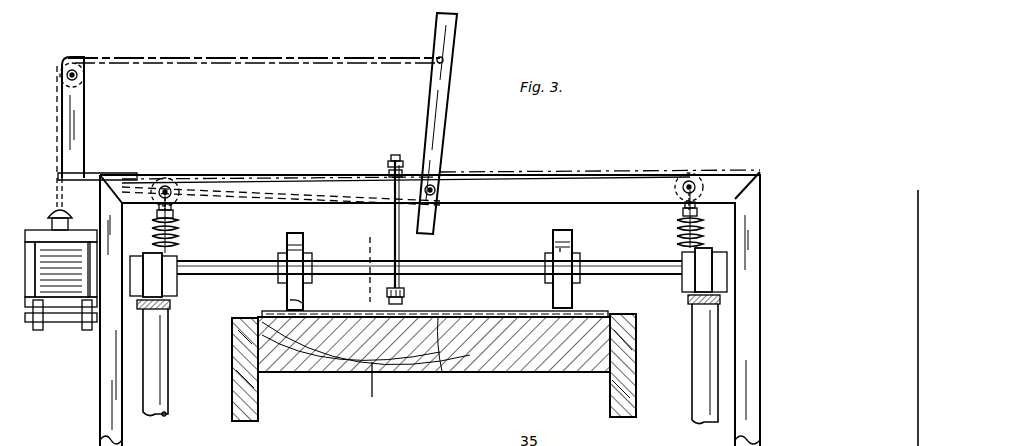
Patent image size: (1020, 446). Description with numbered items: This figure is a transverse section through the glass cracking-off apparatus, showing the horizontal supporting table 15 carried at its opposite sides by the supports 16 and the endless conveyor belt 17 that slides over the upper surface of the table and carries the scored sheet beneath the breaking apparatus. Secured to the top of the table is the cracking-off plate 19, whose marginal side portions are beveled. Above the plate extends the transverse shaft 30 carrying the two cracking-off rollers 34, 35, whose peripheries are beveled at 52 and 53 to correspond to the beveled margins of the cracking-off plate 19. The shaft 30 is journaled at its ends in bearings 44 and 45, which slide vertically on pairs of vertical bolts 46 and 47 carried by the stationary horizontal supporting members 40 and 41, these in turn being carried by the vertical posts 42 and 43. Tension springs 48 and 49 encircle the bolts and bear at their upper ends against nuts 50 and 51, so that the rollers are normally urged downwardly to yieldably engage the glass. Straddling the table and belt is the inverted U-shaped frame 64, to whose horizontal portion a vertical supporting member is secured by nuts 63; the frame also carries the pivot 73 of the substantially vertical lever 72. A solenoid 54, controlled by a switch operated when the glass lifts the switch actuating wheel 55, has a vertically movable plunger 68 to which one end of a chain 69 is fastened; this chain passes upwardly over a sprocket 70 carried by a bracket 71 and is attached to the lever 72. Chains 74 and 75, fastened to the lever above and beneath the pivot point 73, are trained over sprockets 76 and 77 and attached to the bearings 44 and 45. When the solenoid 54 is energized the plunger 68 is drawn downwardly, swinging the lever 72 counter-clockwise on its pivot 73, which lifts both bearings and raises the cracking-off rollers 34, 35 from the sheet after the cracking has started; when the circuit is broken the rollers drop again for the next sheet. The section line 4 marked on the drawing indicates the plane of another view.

The section line 4- 4 is at (388, 237).
The supporting table 15 is at (506, 368).
The supports 16 is at (246, 406).
The endless conveyor belt 17 is at (448, 312).
The cracking-off plate 19 is at (442, 364).
The shaft 30 is at (486, 267).
The cracking-off roller 34 is at (576, 238).
The cracking-off roller 35 is at (302, 240).
The horizontal supporting member 40 is at (690, 307).
The horizontal supporting member 41 is at (167, 308).
The vertical post 42 is at (696, 409).
The vertical post 43 is at (154, 352).
The bearing 44 is at (696, 280).
The bearing 45 is at (176, 290).
The vertical bolts 46 is at (704, 227).
The vertical bolts 47 is at (156, 215).
The tension spring 48 is at (684, 232).
The tension spring 49 is at (173, 242).
The nut 50 is at (683, 212).
The nut 51 is at (170, 218).
The beveled periphery 52 is at (560, 245).
The beveled periphery 53 is at (300, 300).
The solenoid 54 is at (48, 268).
The switch actuating wheel 55 is at (387, 295).
The nuts 63 is at (386, 168).
The inverted U-shaped frame 64 is at (276, 176).
The plunger 68 is at (50, 217).
The chain 69 is at (57, 148).
The sprocket 70 is at (80, 74).
The bracket 71 is at (70, 113).
The vertical lever 72 is at (440, 80).
The pivot point 73 is at (436, 189).
The chain 74 is at (526, 168).
The chain 75 is at (260, 195).
The sprocket 76 is at (675, 189).
The sprocket 77 is at (182, 206).